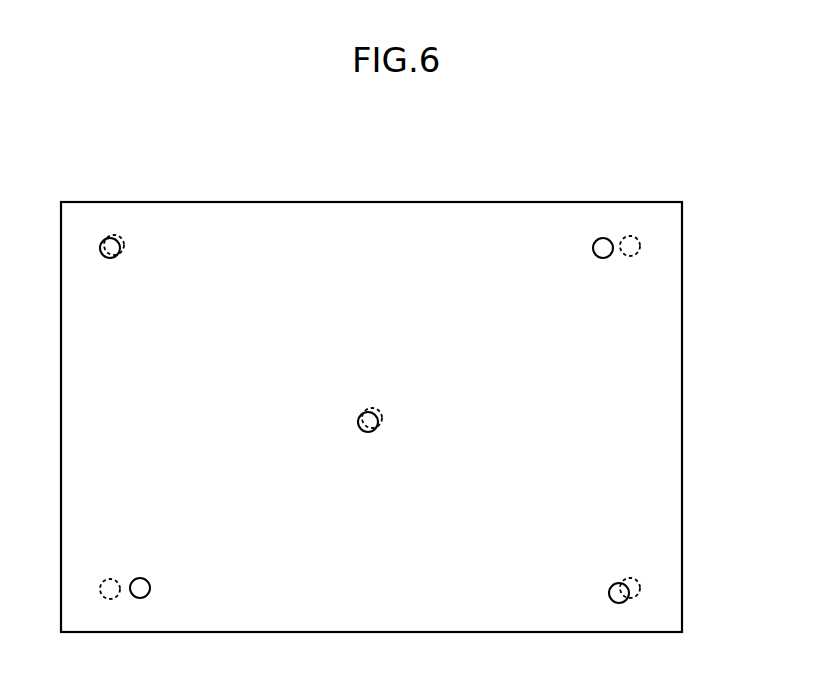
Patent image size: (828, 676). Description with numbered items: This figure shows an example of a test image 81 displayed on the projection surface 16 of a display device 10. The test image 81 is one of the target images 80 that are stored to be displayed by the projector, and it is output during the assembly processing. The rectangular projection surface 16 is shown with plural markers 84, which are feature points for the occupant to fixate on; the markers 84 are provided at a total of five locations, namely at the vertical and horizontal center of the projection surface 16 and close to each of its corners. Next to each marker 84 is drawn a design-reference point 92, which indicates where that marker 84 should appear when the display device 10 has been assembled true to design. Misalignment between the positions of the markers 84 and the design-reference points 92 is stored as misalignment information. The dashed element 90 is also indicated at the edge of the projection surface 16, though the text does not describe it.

The projection surface 16 is at (371, 375).
The display device 10 is at (371, 375).
The test image 81 is at (371, 388).
The target image 80 is at (280, 218).
The adhesive layer 90 is at (370, 215).
The marker 84 is at (104, 257).
The design-reference point 92 is at (120, 238).